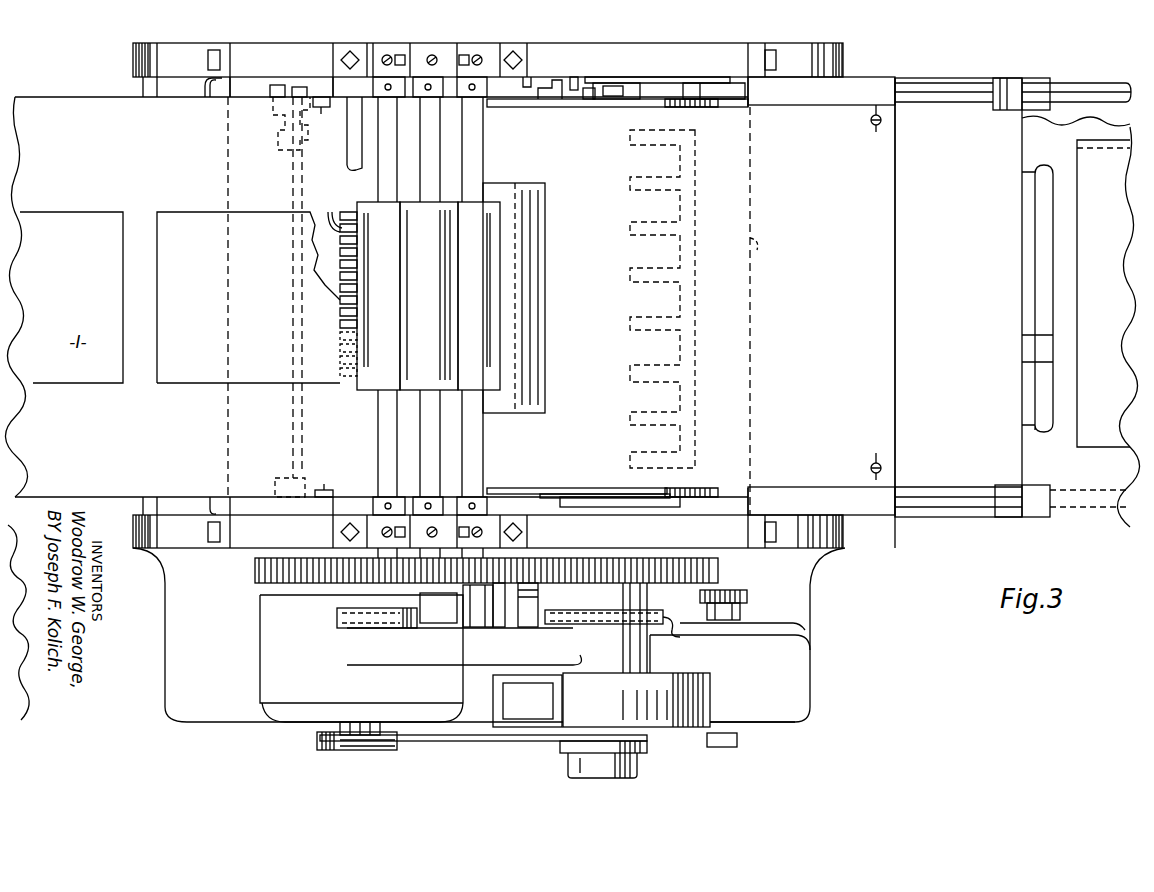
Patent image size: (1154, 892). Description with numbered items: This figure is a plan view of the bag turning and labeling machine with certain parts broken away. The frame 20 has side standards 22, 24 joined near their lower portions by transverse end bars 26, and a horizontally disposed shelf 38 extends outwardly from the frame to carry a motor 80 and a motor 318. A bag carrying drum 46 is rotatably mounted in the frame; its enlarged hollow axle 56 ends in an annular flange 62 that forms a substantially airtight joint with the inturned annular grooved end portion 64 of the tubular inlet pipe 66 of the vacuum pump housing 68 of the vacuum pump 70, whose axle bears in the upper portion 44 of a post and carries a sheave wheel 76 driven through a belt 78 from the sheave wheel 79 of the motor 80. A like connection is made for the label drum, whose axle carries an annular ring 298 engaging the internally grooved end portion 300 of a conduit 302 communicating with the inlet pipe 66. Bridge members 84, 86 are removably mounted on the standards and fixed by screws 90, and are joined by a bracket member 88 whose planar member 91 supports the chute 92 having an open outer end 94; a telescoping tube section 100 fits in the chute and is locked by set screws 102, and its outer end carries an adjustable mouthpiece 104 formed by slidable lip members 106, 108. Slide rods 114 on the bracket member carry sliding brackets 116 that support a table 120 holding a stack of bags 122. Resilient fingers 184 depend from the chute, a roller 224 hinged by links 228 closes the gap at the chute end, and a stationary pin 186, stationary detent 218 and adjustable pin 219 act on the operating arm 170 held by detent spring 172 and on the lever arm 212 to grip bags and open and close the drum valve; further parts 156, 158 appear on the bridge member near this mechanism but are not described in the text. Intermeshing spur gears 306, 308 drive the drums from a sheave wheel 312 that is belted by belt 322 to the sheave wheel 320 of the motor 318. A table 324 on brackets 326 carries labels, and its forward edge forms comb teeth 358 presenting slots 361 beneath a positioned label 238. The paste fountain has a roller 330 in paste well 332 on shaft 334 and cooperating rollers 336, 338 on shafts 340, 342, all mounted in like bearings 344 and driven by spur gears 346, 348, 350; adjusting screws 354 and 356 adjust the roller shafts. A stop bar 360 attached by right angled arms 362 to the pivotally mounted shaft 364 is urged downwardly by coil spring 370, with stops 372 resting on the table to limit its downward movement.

The frame 20 is at (200, 548).
The side standard 22 is at (848, 548).
The side standard 24 is at (845, 50).
The transverse end bars 26 is at (150, 86).
The shelf 38 is at (464, 635).
The upper portion of post 44 is at (570, 776).
The bag carrying drum 46 is at (712, 105).
The hollow axle 56 is at (590, 500).
The annular flange 62 is at (572, 626).
The inturned annular grooved end portion 64 is at (672, 630).
The tubular inlet pipe 66 is at (650, 658).
The vacuum pump housing 68 is at (672, 718).
The vacuum pump 70 is at (601, 700).
The sheave wheel 76 is at (578, 752).
The belt 78 is at (435, 745).
The sheave wheel 79 is at (345, 752).
The motor 80 is at (275, 690).
The bridge member 84 is at (660, 50).
The bridge member 86 is at (488, 518).
The bracket member 88 is at (800, 90).
The screws 90 is at (775, 55).
The planar member 91 is at (750, 248).
The chute 92 is at (770, 311).
The open outer end 94 is at (895, 262).
The telescoping tube section 100 is at (958, 297).
The set screws 102 is at (871, 125).
The adjustable mouthpiece 104 is at (1043, 275).
The lip member 106 is at (1043, 212).
The lip member 108 is at (1043, 394).
The slide rods 114 is at (1080, 85).
The sliding brackets 116 is at (1010, 85).
The table 120 is at (1085, 508).
The stack of bags 122 is at (1081, 321).
The block 156 is at (718, 90).
The block 158 is at (690, 87).
The operating arm 170 is at (610, 100).
The detent spring 172 is at (636, 77).
The resilient fingers 184 is at (640, 405).
The stationary pin 186 is at (612, 85).
The lever arm 212 is at (553, 88).
The stationary detent 218 is at (575, 85).
The adjustable pin 219 is at (535, 85).
The roller 224 is at (500, 446).
The links 228 is at (523, 107).
The label 238 is at (187, 383).
The annular ring 298 is at (337, 614).
The internally grooved end portion 300 is at (338, 626).
The conduit 302 is at (413, 660).
The spur gear 306 is at (720, 573).
The spur gear 308 is at (257, 580).
The sheave wheel 312 is at (472, 615).
The motor 318 is at (730, 685).
The sheave wheel 320 is at (748, 592).
The belt 322 is at (748, 607).
The table 324 is at (376, 297).
The brackets 326 is at (210, 97).
The roller 330 is at (492, 306).
The paste well 332 is at (525, 183).
The shaft 334 is at (492, 469).
The roller 336 is at (440, 325).
The roller 338 is at (357, 393).
The shaft 340 is at (420, 400).
The shaft 342 is at (380, 433).
The bearings 344 is at (377, 43).
The spur gear 346 is at (510, 600).
The spur gear 348 is at (428, 583).
The spur gear 350 is at (372, 600).
The adjusting screws 354 is at (468, 50).
The adjusting screws 356 is at (392, 55).
The comb teeth 358 is at (345, 222).
The stop bar 360 is at (347, 160).
The slots 361 is at (340, 280).
The right angled arms 362 is at (333, 90).
The shaft 364 is at (292, 185).
The coil spring 370 is at (278, 140).
The stops 372 is at (321, 107).